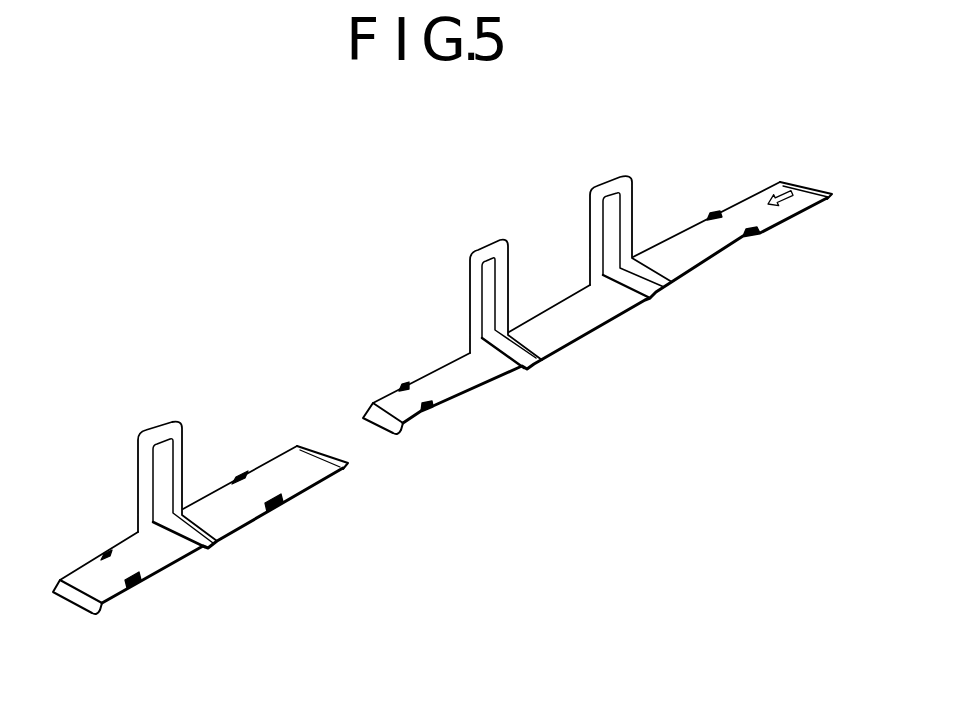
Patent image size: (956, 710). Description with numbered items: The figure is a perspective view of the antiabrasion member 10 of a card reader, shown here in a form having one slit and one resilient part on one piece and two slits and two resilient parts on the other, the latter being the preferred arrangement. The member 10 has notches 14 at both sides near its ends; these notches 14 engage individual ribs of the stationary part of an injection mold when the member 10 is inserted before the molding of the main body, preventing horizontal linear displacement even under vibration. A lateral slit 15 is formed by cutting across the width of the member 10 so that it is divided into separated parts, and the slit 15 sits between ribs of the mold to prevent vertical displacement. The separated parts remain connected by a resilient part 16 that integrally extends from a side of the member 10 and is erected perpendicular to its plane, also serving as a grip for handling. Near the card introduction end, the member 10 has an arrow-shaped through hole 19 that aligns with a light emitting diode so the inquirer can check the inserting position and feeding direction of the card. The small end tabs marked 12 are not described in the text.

The antiabrasion member 10 is at (742, 190).
The end tab 12 is at (72, 600).
The notches 14 is at (143, 582).
The lateral slit 15 is at (210, 544).
The resilient part 16 is at (162, 427).
The arrow-shaped through hole 19 is at (787, 197).